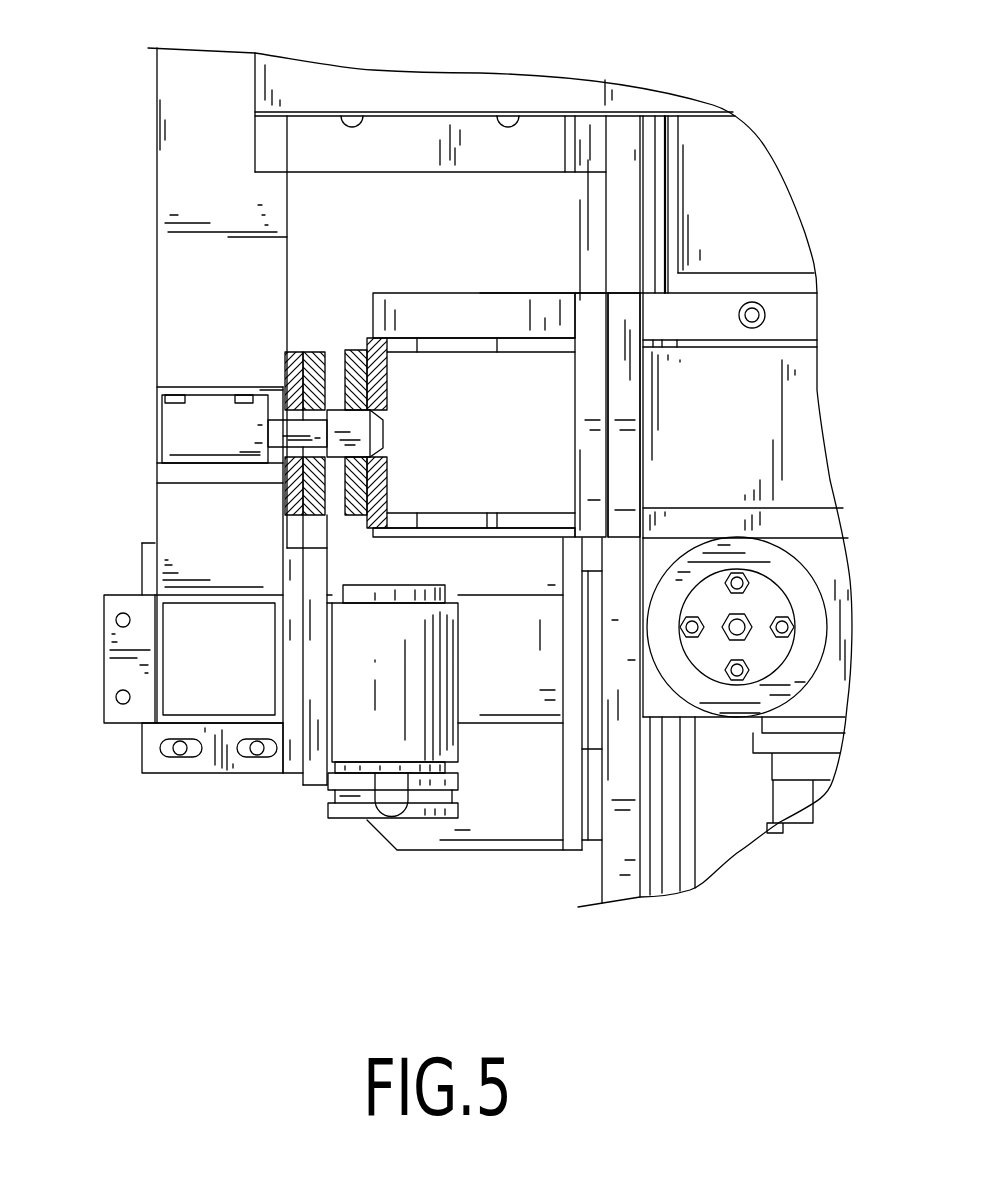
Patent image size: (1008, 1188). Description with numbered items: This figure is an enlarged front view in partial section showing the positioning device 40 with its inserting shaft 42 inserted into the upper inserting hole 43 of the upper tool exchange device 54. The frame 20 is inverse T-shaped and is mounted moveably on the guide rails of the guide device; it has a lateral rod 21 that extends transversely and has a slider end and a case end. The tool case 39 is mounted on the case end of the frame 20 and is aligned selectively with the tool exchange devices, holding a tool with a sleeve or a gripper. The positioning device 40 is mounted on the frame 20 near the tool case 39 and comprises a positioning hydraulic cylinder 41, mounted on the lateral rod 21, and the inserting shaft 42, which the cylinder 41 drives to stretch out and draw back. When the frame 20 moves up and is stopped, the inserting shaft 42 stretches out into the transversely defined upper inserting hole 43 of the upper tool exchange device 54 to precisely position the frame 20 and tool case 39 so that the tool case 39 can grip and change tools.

The frame 20 is at (95, 595).
The lateral rod 21 is at (155, 685).
The tool case 39 is at (352, 808).
The positioning device 40 is at (147, 412).
The positioning hydraulic cylinder 41 is at (195, 452).
The inserting shaft 42 is at (293, 432).
The upper inserting hole 43 is at (383, 418).
The upper tool exchange device 54 is at (790, 518).